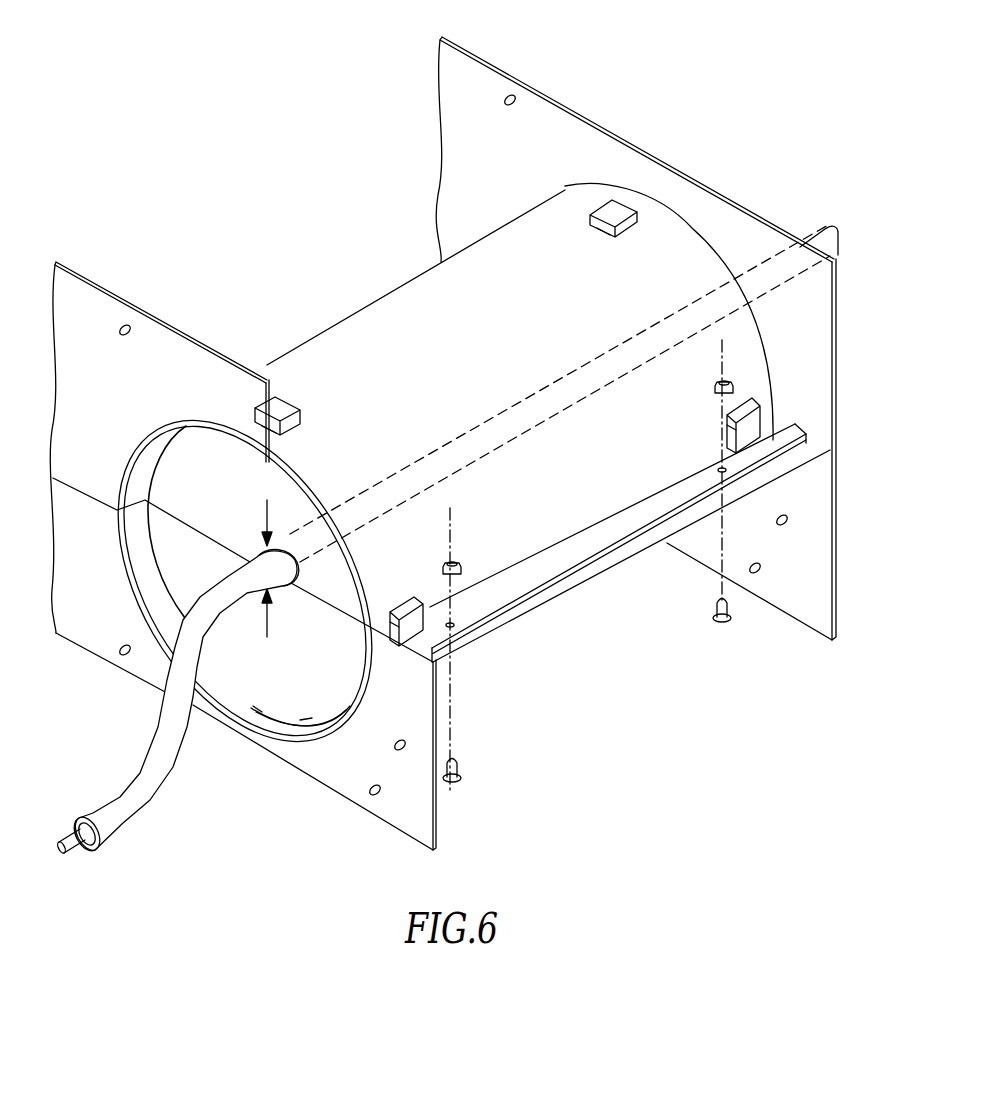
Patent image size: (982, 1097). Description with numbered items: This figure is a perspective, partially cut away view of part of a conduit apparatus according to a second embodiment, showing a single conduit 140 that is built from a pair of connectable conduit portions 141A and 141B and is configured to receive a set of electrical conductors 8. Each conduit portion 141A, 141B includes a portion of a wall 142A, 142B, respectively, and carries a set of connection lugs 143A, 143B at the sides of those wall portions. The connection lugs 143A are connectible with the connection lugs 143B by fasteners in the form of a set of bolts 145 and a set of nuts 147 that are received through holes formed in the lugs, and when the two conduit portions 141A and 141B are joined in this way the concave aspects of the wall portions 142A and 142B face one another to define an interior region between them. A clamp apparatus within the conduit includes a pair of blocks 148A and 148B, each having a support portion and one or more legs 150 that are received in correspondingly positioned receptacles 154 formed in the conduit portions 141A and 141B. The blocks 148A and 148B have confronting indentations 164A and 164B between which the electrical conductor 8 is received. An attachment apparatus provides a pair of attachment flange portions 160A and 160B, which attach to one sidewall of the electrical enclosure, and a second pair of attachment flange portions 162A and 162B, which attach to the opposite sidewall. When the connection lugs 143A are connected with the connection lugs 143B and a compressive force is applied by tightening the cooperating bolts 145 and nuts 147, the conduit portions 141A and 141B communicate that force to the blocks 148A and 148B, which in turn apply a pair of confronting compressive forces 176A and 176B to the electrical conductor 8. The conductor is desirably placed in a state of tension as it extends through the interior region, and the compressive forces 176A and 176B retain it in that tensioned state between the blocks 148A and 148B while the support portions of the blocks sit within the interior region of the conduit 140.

The electrical conductors 8 is at (108, 842).
The conduit 140 is at (368, 300).
The conduit portion 141A is at (232, 708).
The conduit portion 141B is at (290, 350).
The portion of a wall 142A is at (578, 570).
The portion of a wall 142B is at (538, 540).
The connection lugs 143A is at (653, 535).
The connection lugs 143B is at (620, 518).
The bolts 145 is at (461, 781).
The nuts 147 is at (460, 567).
The block 148A is at (335, 702).
The block 148B is at (208, 442).
The legs 150 is at (610, 208).
The receptacles 154 is at (603, 237).
The attachment flange portion 160A is at (397, 830).
The attachment flange portion 160B is at (78, 278).
The attachment flange portion 162A is at (795, 620).
The attachment flange portion 162B is at (477, 58).
The indentation 164A is at (275, 592).
The indentation 164B is at (254, 564).
The compressive force 176A is at (278, 632).
The compressive force 176B is at (263, 512).